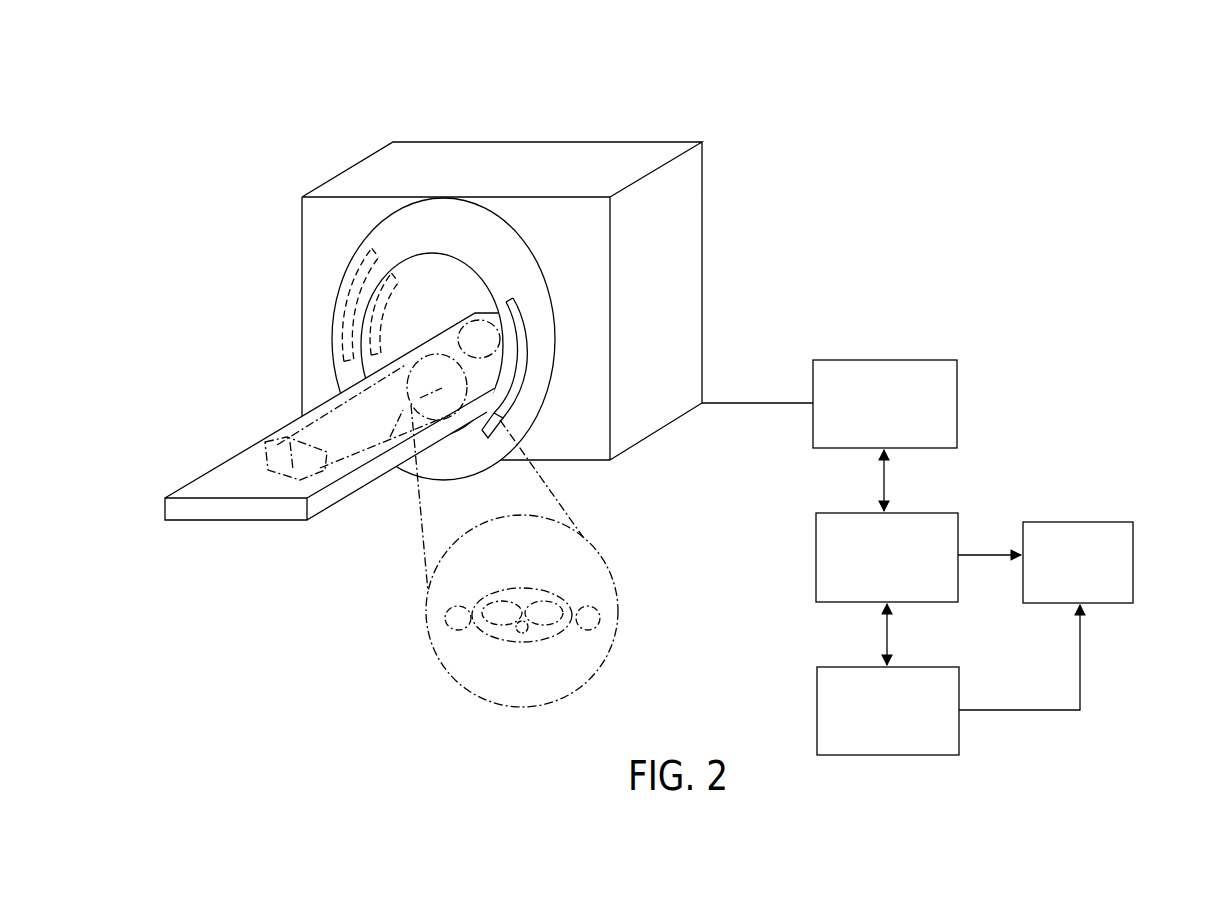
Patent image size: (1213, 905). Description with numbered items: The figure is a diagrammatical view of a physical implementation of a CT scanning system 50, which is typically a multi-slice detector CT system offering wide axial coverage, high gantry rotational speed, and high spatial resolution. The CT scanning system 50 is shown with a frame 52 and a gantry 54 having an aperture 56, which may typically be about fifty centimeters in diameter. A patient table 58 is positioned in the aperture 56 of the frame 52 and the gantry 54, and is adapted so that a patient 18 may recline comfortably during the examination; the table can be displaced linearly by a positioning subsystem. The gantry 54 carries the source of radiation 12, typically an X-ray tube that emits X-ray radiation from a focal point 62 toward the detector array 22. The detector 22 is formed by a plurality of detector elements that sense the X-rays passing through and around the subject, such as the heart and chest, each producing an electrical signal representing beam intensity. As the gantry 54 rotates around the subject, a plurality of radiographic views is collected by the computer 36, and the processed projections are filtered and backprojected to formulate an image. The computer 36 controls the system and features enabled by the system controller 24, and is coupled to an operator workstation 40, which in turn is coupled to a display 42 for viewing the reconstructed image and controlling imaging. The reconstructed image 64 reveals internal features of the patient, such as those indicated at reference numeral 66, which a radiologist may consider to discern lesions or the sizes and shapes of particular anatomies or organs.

The CT scanning system 50 is at (680, 112).
The frame 52 is at (693, 233).
The gantry 54 is at (423, 225).
The aperture 56 is at (447, 290).
The focal point 62 is at (368, 327).
The source of radiation 12 is at (347, 348).
The detector array 22 is at (517, 357).
The patient 18 is at (293, 443).
The patient table 58 is at (215, 515).
The image 64 is at (610, 650).
The features 66 is at (540, 595).
The system controller 24 is at (957, 385).
The computer 36 is at (815, 537).
The display 42 is at (1133, 544).
The operator workstation 40 is at (817, 697).